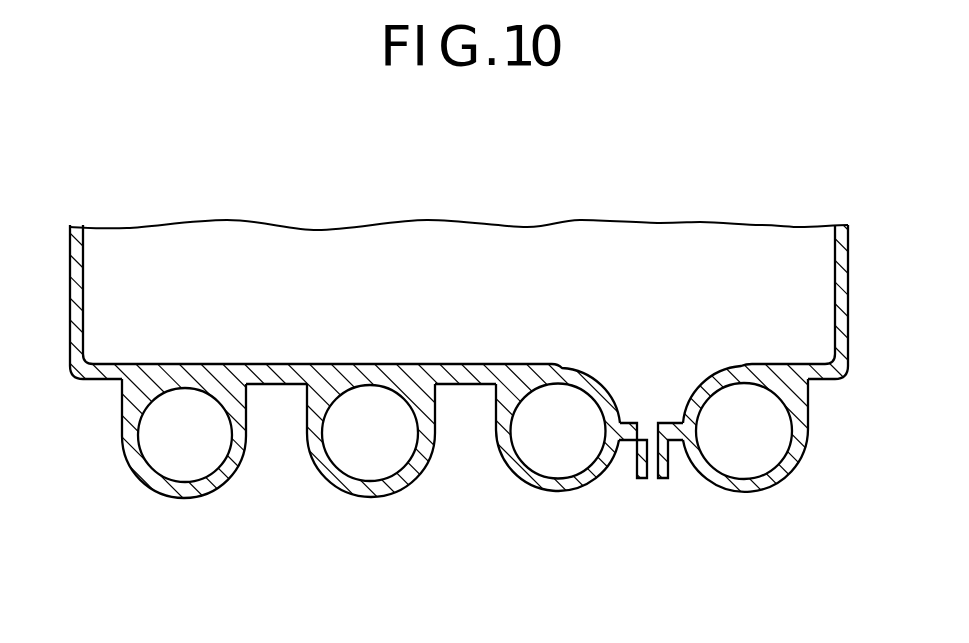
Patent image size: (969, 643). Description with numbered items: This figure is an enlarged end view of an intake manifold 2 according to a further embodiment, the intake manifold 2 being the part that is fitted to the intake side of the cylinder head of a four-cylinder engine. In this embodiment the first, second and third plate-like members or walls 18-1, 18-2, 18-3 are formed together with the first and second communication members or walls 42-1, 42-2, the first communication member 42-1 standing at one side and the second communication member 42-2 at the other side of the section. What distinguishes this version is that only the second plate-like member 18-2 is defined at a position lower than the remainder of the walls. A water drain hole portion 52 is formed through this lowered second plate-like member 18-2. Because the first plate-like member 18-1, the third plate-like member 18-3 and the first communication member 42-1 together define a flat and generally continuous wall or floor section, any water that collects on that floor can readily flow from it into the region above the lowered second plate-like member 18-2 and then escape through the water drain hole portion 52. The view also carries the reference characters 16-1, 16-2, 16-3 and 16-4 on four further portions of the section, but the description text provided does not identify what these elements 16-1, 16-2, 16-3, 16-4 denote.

The intake manifold 2 is at (502, 466).
The first cylindrical holding portion 16-1 is at (150, 487).
The second cylindrical holding portion 16-2 is at (332, 483).
The third cylindrical holding portion 16-3 is at (530, 485).
The fourth cylindrical holding portion 16-4 is at (742, 492).
The first plate-like member 18-1 is at (275, 364).
The second plate-like member 18-2 is at (633, 421).
The third plate-like member 18-3 is at (450, 364).
The first communication member 42-1 is at (103, 362).
The second communication member 42-2 is at (818, 363).
The water drain hole portion 52 is at (650, 482).